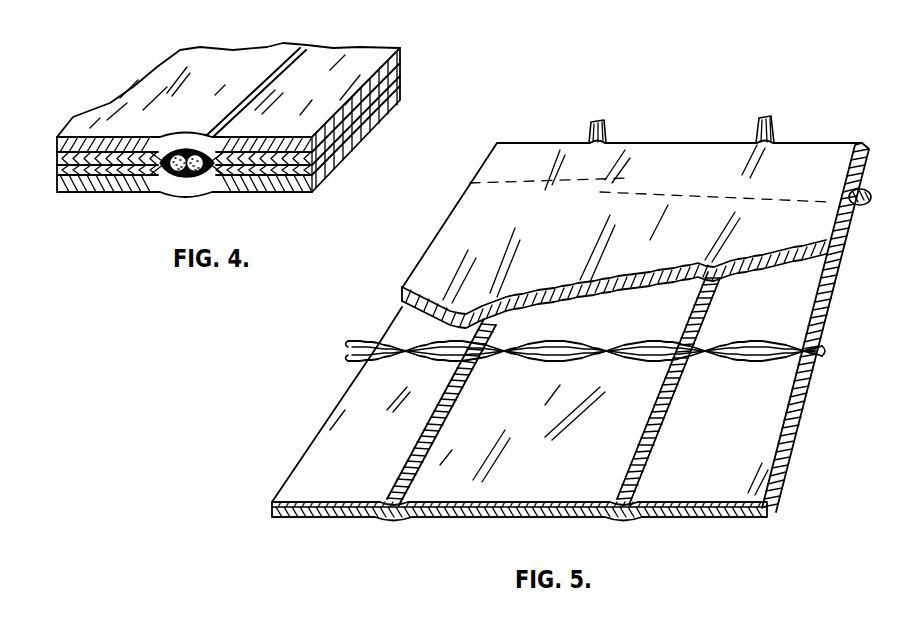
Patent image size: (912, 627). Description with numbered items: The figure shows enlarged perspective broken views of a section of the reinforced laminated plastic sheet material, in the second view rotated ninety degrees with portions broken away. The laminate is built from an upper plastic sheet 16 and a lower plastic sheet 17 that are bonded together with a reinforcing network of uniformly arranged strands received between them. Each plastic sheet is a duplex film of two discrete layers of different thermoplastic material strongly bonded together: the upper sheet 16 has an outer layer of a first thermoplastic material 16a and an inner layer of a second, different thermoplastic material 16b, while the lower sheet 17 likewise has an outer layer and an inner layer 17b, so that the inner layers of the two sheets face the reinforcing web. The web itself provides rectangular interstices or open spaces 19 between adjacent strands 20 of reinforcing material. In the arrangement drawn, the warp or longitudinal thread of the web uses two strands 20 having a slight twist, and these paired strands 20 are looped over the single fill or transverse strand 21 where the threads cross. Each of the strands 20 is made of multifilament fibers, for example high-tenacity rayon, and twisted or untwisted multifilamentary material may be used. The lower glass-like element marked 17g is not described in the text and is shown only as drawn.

In FIG. 4, the upper plastic sheet 16 is at (228, 60).
In FIG. 4, the outer layer of first thermoplastic material 16a is at (403, 57).
In FIG. 5, the outer layer of first thermoplastic material 16a is at (458, 240).
In FIG. 4, the inner layer of second thermoplastic material 16b is at (399, 73).
In FIG. 5, the inner layer of second thermoplastic material 16b is at (404, 307).
In FIG. 4, the lower plastic sheet 17 is at (280, 190).
In FIG. 4, the inner layer of lower sheet 17b is at (59, 174).
In FIG. 5, the inner layer of lower sheet 17b is at (763, 463).
In FIG. 4, the lower glass sheet 17g is at (75, 190).
In FIG. 5, the lower glass sheet 17g is at (770, 517).
In FIG. 5, the open spaces 19 is at (478, 490).
In FIG. 4, the strands 20 is at (178, 172).
In FIG. 5, the strands 20 is at (357, 347).
In FIG. 5, the fill strand 21 is at (458, 411).